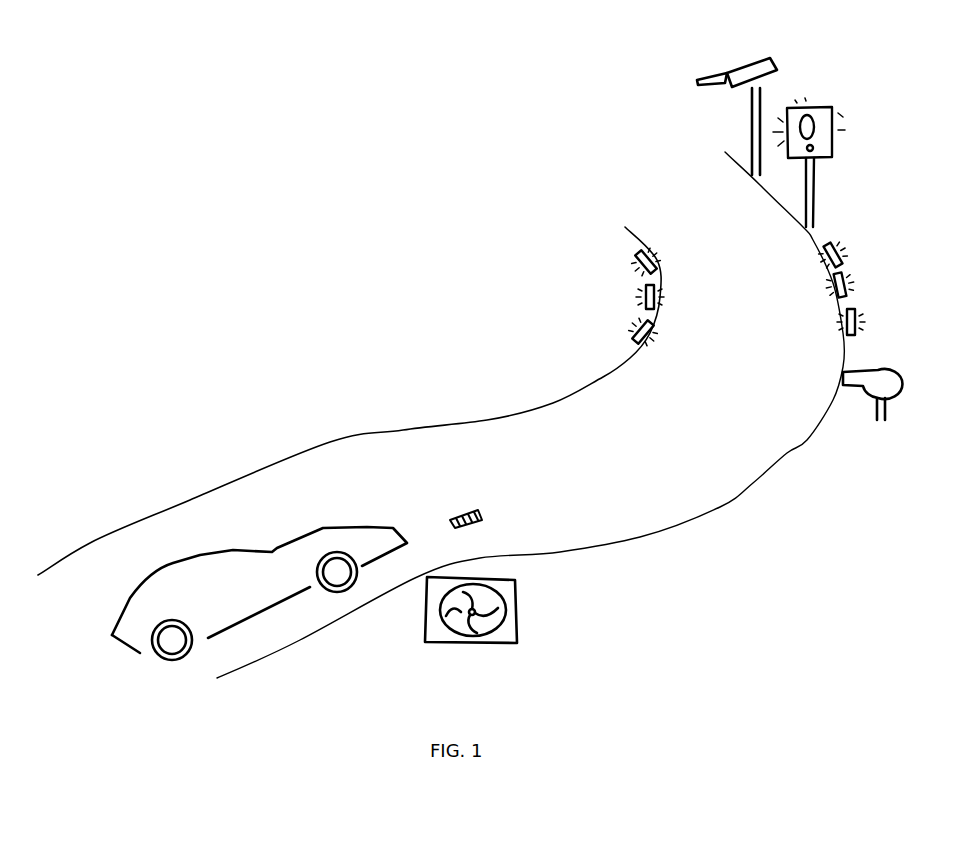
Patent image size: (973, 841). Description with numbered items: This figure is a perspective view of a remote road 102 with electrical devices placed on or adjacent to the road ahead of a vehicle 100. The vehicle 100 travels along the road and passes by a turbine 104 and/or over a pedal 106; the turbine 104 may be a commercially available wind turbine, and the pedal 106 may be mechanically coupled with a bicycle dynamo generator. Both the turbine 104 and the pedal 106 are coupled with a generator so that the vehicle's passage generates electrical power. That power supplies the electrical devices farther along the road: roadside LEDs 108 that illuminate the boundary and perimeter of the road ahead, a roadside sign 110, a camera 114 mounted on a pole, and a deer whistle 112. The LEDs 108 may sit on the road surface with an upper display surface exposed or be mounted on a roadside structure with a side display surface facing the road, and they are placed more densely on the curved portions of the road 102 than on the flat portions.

The vehicle 100 is at (173, 565).
The remote road 102 is at (742, 495).
The turbine 104 is at (517, 637).
The pedal 106 is at (480, 522).
The roadside LEDs 108 is at (642, 300).
The roadside sign 110 is at (833, 137).
The deer whistle 112 is at (893, 413).
The camera 114 is at (727, 73).